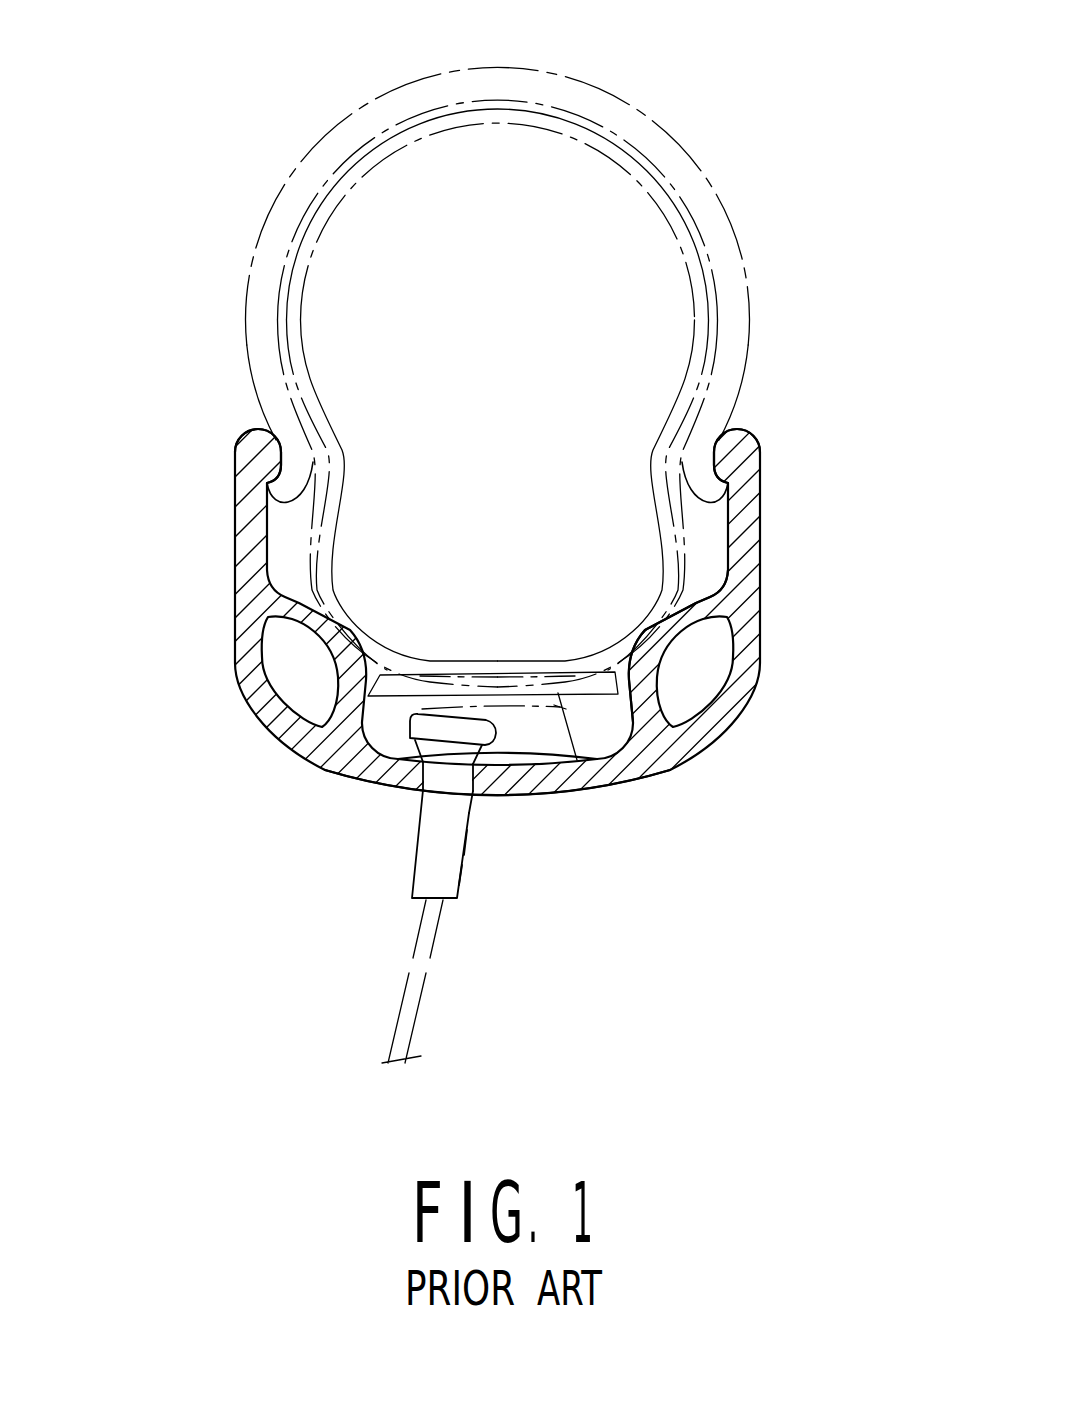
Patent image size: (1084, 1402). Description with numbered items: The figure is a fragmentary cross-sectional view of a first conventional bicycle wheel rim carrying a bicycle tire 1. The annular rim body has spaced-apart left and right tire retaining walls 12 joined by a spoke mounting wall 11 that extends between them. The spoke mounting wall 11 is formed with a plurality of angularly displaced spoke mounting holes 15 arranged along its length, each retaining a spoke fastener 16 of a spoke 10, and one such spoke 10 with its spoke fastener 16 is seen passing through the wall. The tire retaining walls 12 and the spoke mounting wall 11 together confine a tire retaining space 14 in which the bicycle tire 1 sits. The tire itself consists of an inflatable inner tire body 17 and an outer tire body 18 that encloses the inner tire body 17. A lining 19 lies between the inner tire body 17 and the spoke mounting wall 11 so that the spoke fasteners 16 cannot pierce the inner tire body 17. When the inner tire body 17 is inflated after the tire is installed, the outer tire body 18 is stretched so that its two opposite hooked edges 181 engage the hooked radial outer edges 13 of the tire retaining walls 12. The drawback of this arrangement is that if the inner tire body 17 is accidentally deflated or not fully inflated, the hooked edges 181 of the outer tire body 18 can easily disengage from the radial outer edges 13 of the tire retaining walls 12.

The bicycle tire 1 is at (780, 290).
The spoke 10 is at (423, 988).
The spoke mounting wall 11 is at (532, 786).
The tire retaining wall 12 is at (253, 542).
The hooked radial outer edge 13 is at (252, 448).
The tire retaining space 14 is at (706, 543).
The spoke mounting hole 15 is at (395, 770).
The spoke fastener 16 is at (422, 853).
The inner tire body 17 is at (683, 247).
The outer tire body 18 is at (669, 175).
The hooked edge 181 is at (287, 490).
The lining 19 is at (597, 800).